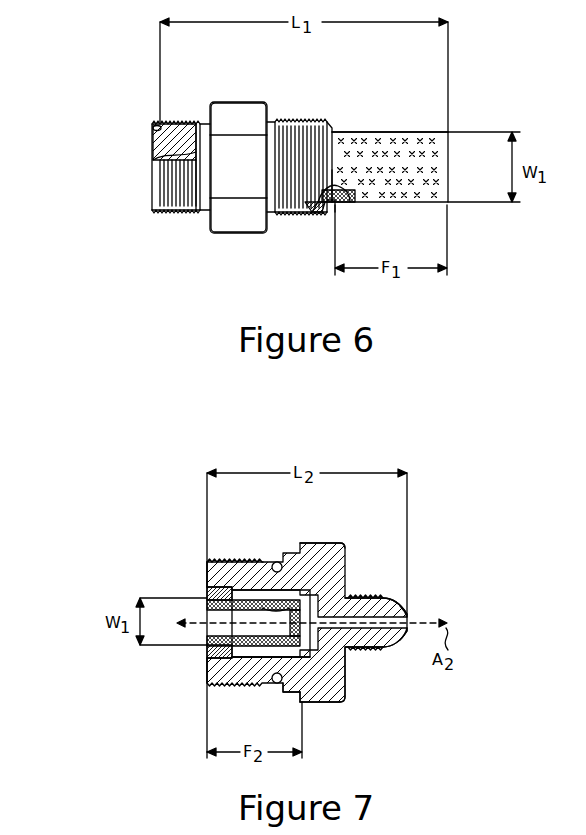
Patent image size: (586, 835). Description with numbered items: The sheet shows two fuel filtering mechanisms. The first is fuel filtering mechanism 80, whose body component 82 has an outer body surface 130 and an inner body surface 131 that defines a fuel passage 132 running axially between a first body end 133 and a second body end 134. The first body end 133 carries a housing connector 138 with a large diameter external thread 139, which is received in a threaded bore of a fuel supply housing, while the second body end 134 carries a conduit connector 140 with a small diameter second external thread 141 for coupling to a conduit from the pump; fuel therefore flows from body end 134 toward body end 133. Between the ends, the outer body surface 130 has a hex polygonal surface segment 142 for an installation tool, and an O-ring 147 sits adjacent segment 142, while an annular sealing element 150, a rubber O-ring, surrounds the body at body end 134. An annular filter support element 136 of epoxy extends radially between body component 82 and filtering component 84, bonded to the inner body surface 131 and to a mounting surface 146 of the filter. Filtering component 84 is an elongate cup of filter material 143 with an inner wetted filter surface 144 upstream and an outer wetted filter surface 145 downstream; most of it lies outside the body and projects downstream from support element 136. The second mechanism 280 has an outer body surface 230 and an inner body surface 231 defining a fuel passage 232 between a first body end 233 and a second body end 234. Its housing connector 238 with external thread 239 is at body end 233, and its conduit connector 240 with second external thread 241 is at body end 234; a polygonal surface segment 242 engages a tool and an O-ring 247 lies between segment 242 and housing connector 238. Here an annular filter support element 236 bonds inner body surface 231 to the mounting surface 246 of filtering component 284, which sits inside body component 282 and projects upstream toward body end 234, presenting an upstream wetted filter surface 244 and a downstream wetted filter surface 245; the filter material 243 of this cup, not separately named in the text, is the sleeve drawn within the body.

In FIG. 6, the fuel filtering mechanism 80 is at (77, 137).
In FIG. 6, the body component 82 is at (160, 212).
In FIG. 6, the filtering component 84 is at (358, 203).
In FIG. 6, the outer body surface 130 is at (240, 236).
In FIG. 6, the inner body surface 131 is at (320, 211).
In FIG. 6, the fuel passage 132 is at (334, 134).
In FIG. 6, the first body end 133 is at (328, 120).
In FIG. 6, the second body end 134 is at (150, 199).
In FIG. 6, the annular filter support element 136 is at (336, 206).
In FIG. 6, the housing connector 138 is at (306, 117).
In FIG. 6, the external thread 139 is at (278, 216).
In FIG. 6, the conduit connector 140 is at (172, 216).
In FIG. 6, the second external thread 141 is at (205, 214).
In FIG. 6, the polygonal surface segment 142 is at (232, 101).
In FIG. 6, the filter material 143 is at (407, 131).
In FIG. 6, the inner wetted filter surface 144 is at (338, 190).
In FIG. 6, the outer wetted filter surface 145 is at (438, 150).
In FIG. 6, the mounting surface 146 is at (327, 214).
In FIG. 6, the O-ring 147 is at (271, 121).
In FIG. 6, the annular sealing element 150 is at (155, 128).
In FIG. 7, the outer body surface 230 is at (312, 706).
In FIG. 7, the inner body surface 231 is at (407, 607).
In FIG. 7, the fuel passage 232 is at (352, 597).
In FIG. 7, the first body end 233 is at (203, 565).
In FIG. 7, the second body end 234 is at (418, 618).
In FIG. 7, the annular filter support element 236 is at (205, 593).
In FIG. 7, the housing connector 238 is at (234, 557).
In FIG. 7, the external thread 239 is at (272, 562).
In FIG. 7, the conduit connector 240 is at (365, 692).
In FIG. 7, the second external thread 241 is at (362, 652).
In FIG. 7, the polygonal surface segment 242 is at (330, 703).
In FIG. 7, the sleeve 243 is at (230, 683).
In FIG. 7, the upstream wetted filter surface 244 is at (252, 658).
In FIG. 7, the downstream wetted filter surface 245 is at (288, 596).
In FIG. 7, the mounting surface 246 is at (205, 655).
In FIG. 7, the O-ring 247 is at (276, 683).
In FIG. 7, the mechanism 280 is at (128, 537).
In FIG. 7, the body component 282 is at (333, 556).
In FIG. 7, the filtering component 284 is at (232, 660).